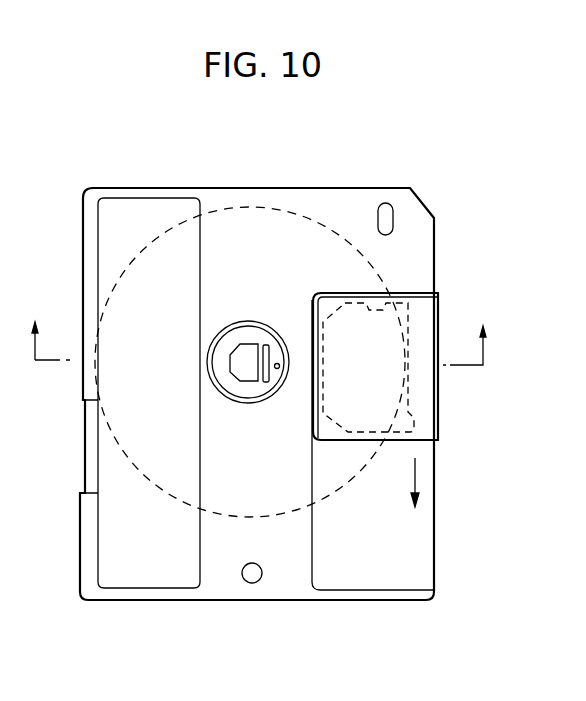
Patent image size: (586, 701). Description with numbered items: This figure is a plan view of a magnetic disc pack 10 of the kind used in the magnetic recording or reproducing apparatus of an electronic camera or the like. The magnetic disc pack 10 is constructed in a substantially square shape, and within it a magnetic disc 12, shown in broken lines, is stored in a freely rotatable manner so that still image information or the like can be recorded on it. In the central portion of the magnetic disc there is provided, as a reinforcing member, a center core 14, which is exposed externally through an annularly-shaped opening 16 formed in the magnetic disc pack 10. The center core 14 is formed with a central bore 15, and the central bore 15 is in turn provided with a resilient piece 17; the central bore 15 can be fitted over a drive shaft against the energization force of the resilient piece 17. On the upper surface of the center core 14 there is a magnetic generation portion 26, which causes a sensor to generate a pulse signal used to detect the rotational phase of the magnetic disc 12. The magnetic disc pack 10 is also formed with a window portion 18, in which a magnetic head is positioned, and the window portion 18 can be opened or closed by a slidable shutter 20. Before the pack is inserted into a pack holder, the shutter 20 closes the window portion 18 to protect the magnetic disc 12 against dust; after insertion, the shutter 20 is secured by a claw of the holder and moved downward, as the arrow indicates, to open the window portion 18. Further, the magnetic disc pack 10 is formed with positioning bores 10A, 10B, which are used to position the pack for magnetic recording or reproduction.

The magnetic disc pack 10 is at (287, 188).
The positioning bore 10A is at (392, 212).
The positioning bore 10B is at (252, 583).
The magnetic disc 12 is at (340, 230).
The center core 14 is at (242, 340).
The central bore 15 is at (238, 385).
The annularly-shaped opening 16 is at (265, 335).
The resilient piece 17 is at (252, 372).
The window portion 18 is at (385, 300).
The shutter 20 is at (440, 310).
The magnetic generation portion 26 is at (278, 370).